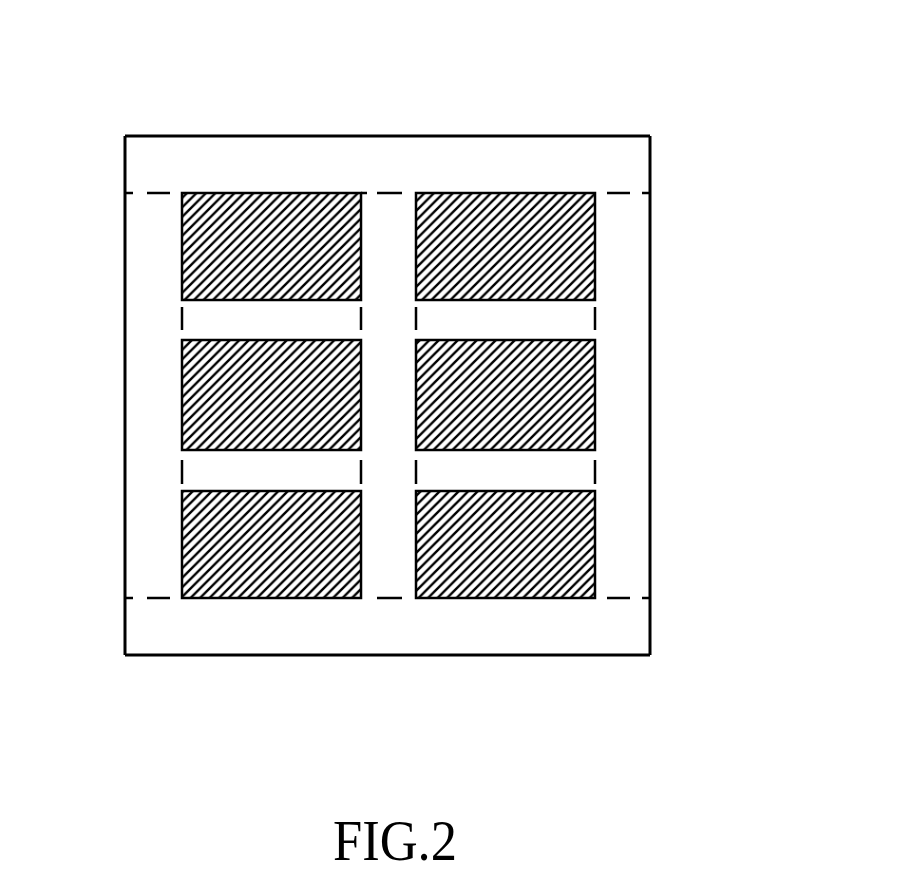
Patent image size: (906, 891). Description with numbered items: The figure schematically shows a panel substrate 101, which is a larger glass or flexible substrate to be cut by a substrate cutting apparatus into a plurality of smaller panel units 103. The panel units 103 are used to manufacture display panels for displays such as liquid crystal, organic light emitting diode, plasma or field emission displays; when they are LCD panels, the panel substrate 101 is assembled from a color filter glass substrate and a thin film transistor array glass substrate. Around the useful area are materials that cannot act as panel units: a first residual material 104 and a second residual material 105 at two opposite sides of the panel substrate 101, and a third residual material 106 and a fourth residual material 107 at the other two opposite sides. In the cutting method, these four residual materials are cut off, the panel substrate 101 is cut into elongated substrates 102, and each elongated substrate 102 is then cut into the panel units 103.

The panel substrate 101 is at (493, 115).
The elongated substrate 102 is at (361, 602).
The panel unit 103 is at (577, 256).
The first residual material 104 is at (627, 160).
The second residual material 105 is at (635, 622).
The third residual material 106 is at (635, 375).
The fourth residual material 107 is at (135, 340).